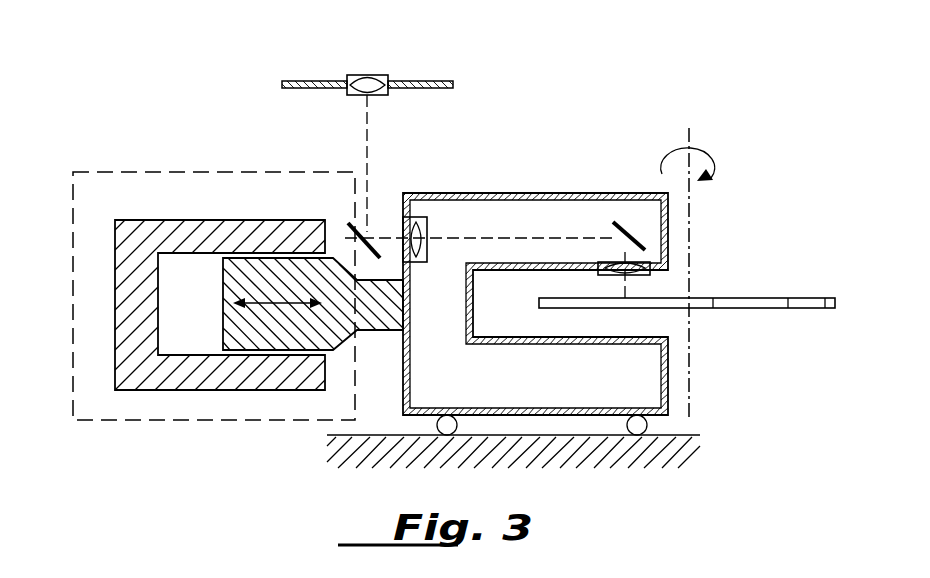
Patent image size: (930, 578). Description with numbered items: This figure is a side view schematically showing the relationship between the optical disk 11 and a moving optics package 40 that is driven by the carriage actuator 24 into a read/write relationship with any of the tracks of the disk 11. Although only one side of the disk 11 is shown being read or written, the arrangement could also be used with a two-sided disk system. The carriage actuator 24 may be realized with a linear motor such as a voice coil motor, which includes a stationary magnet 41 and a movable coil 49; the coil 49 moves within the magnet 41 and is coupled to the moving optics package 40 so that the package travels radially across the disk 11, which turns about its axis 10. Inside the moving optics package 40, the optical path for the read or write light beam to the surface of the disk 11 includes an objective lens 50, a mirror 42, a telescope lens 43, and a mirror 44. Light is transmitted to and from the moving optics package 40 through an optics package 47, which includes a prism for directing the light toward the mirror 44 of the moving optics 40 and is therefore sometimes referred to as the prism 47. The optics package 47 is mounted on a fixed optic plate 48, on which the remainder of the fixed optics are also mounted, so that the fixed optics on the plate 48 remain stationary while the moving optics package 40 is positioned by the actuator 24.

The axis of rotation 10 is at (690, 248).
The optical disk 11 is at (758, 298).
The carriage actuator 24 is at (204, 421).
The moving optics package 40 is at (517, 193).
The stationary magnet 41 is at (220, 219).
The mirror 42 is at (628, 230).
The telescope lens 43 is at (428, 232).
The mirror 44 is at (348, 228).
The optics package 47 is at (372, 77).
The fixed optic plate 48 is at (445, 80).
The movable coil 49 is at (222, 292).
The objective lens 50 is at (640, 274).